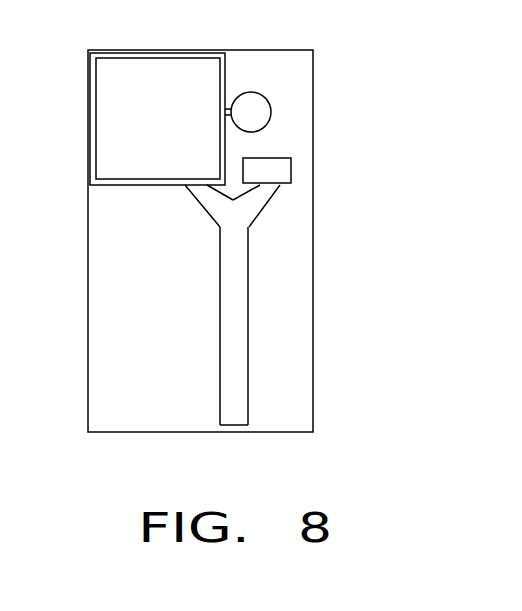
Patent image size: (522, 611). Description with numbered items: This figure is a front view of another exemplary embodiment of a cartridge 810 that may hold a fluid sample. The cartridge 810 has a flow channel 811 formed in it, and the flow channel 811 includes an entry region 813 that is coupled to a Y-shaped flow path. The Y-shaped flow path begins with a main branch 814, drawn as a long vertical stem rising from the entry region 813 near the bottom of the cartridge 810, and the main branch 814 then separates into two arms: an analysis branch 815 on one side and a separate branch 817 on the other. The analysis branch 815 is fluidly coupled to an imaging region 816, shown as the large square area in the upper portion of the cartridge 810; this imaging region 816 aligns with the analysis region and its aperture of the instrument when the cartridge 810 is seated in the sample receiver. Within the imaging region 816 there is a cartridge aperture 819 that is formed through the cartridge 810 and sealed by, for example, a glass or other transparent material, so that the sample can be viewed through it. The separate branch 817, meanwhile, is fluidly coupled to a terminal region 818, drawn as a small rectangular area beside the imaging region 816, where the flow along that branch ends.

The cartridge 810 is at (322, 438).
The flow channel 811 is at (250, 327).
The entry region 813 is at (235, 423).
The main branch 814 is at (249, 270).
The analysis branch 815 is at (205, 213).
The imaging region 816 is at (133, 138).
The separate branch 817 is at (267, 205).
The terminal region 818 is at (277, 157).
The cartridge aperture 819 is at (130, 57).